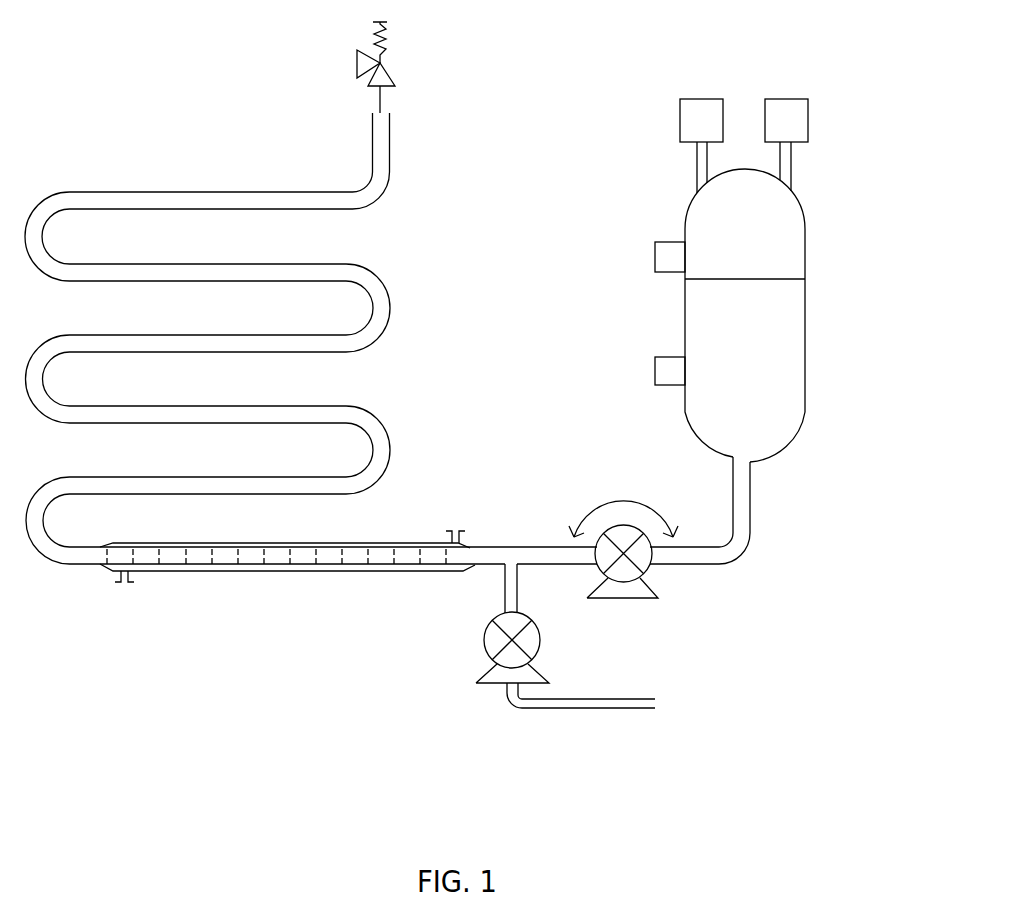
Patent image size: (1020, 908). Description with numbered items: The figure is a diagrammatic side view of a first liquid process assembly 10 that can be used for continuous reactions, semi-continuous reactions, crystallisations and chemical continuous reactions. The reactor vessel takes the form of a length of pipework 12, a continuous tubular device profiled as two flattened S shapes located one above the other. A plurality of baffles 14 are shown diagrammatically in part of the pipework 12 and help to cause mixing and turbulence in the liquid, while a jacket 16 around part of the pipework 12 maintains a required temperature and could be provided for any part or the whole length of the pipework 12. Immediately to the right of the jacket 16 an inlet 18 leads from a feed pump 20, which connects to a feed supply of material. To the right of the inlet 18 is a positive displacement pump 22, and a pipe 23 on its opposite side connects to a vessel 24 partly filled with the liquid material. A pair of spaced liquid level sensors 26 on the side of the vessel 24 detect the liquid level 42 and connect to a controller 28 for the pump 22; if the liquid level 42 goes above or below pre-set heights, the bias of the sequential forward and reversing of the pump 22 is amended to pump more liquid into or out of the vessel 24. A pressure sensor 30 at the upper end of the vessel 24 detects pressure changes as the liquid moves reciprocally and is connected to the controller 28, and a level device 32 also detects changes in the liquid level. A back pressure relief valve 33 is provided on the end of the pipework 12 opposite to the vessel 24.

The liquid process assembly 10 is at (212, 652).
The pipework 12 is at (97, 197).
The baffles 14 is at (335, 572).
The jacket 16 is at (413, 575).
The inlet 18 is at (502, 587).
The feed pump 20 is at (530, 640).
The positive displacement pump 22 is at (642, 558).
The pipe 23 is at (740, 520).
The vessel 24 is at (803, 372).
The liquid level sensors 26 is at (665, 257).
The controller 28 is at (630, 593).
The pressure sensor 30 is at (692, 110).
The level device 32 is at (785, 107).
The back pressure relief valve 33 is at (385, 72).
The liquid level 42 is at (745, 277).